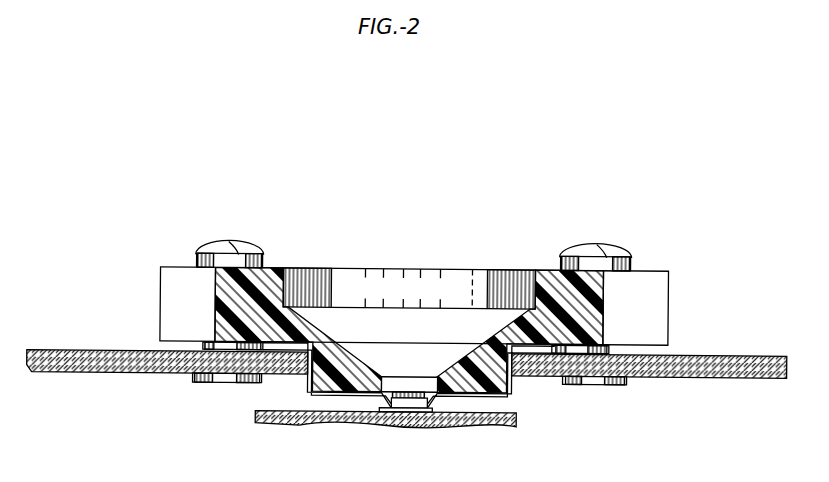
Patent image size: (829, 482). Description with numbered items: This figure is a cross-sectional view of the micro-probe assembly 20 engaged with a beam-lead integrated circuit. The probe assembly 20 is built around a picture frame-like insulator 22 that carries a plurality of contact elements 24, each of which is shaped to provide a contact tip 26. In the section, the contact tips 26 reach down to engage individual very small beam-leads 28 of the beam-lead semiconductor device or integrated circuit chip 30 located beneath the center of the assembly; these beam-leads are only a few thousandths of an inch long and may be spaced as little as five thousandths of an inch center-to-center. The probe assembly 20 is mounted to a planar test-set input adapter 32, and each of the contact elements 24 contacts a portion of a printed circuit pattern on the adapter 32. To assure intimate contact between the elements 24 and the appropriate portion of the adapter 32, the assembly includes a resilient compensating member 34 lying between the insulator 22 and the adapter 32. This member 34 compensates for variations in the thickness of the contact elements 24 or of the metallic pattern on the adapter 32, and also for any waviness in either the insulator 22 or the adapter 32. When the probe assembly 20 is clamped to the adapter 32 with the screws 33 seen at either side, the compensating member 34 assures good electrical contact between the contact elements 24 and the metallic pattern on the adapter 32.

The micro-probe assembly 20 is at (453, 267).
The picture frame-like insulator 22 is at (364, 268).
The contact elements 24 is at (208, 345).
The contact tip 26 is at (383, 401).
The beam-lead 28 is at (430, 410).
The integrated circuit chip 30 is at (415, 400).
The planar test-set input adapter 32 is at (753, 378).
The screws 33 is at (205, 255).
The resilient compensating member 34 is at (265, 349).